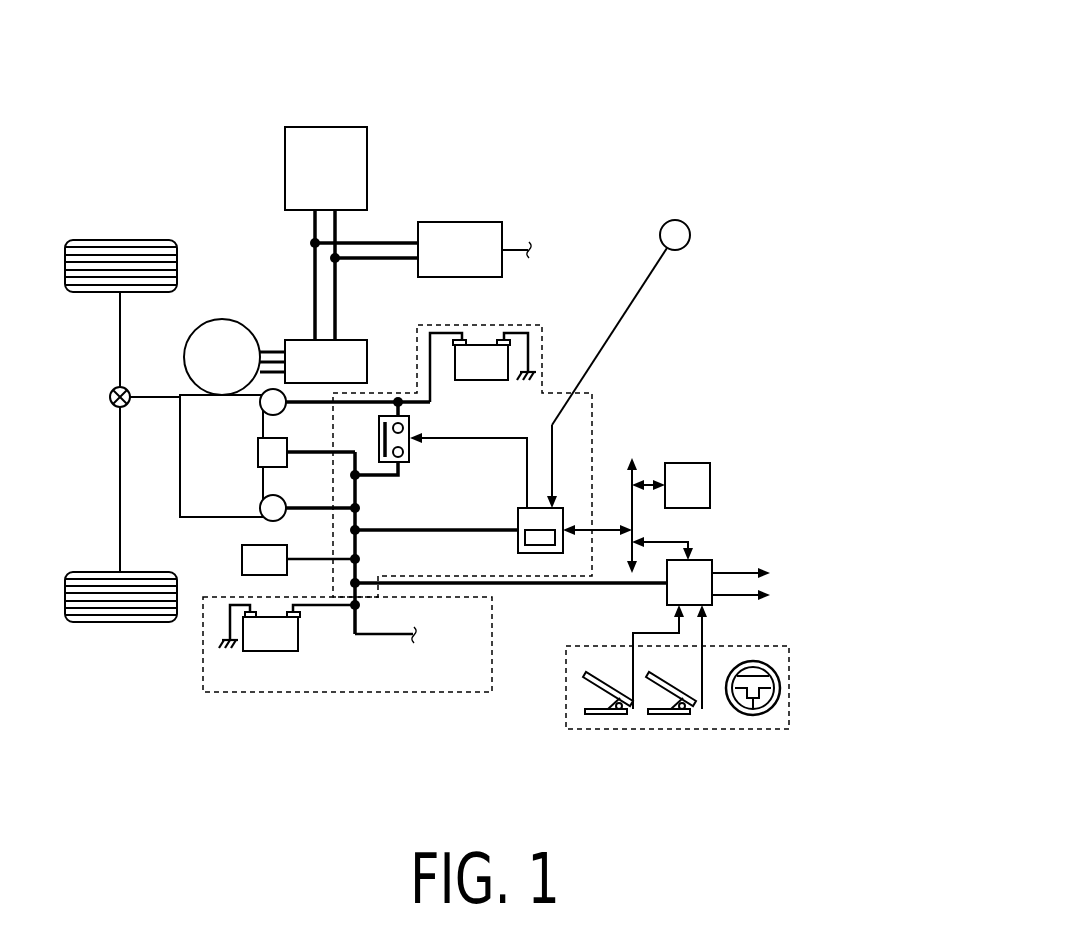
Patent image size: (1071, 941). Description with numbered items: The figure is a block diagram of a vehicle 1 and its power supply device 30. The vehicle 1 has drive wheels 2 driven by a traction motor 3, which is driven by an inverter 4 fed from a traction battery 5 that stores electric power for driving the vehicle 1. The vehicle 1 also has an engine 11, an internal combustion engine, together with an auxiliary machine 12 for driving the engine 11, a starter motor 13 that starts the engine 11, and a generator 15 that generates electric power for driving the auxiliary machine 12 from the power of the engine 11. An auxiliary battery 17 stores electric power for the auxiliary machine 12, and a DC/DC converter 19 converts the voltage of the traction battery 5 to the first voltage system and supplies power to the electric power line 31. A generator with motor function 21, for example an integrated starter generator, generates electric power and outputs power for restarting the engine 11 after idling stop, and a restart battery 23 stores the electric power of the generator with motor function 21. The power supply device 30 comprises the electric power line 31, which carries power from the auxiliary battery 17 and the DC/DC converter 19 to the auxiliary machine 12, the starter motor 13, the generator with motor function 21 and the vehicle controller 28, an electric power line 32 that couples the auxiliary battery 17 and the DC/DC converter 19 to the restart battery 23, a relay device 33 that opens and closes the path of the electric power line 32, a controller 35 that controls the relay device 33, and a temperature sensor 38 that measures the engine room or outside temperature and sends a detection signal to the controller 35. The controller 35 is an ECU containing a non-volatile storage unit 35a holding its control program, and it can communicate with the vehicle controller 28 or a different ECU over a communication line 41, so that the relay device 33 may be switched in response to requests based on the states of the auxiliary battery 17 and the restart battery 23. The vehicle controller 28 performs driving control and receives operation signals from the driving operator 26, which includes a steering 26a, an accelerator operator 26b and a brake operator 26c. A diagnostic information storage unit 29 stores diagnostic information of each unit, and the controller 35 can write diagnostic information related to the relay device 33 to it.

The vehicle 1 is at (525, 51).
The drive wheels 2 is at (145, 238).
The traction motor 3 is at (222, 320).
The inverter 4 is at (345, 340).
The traction battery 5 is at (326, 127).
The engine 11 is at (178, 454).
The auxiliary machine 12 is at (282, 575).
The starter motor 13 is at (282, 520).
The generator 15 is at (282, 467).
The auxiliary battery 17 is at (272, 652).
The DC/DC converter 19 is at (470, 222).
The generator with motor function 21 is at (282, 413).
The restart battery 23 is at (482, 345).
The driving operator 26 is at (790, 693).
The steering 26a is at (747, 715).
The accelerator operator 26b is at (683, 716).
The brake operator 26c is at (615, 716).
The vehicle controller 28 is at (708, 558).
The diagnostic information storage unit 29 is at (700, 462).
The power supply device 30 is at (543, 325).
The electric power line 31 is at (383, 636).
The electric power line 32 is at (383, 477).
The relay device 33 is at (410, 452).
The controller 35 is at (518, 508).
The storage unit 35a is at (525, 538).
The temperature sensor 38 is at (690, 227).
The communication line 41 is at (630, 478).